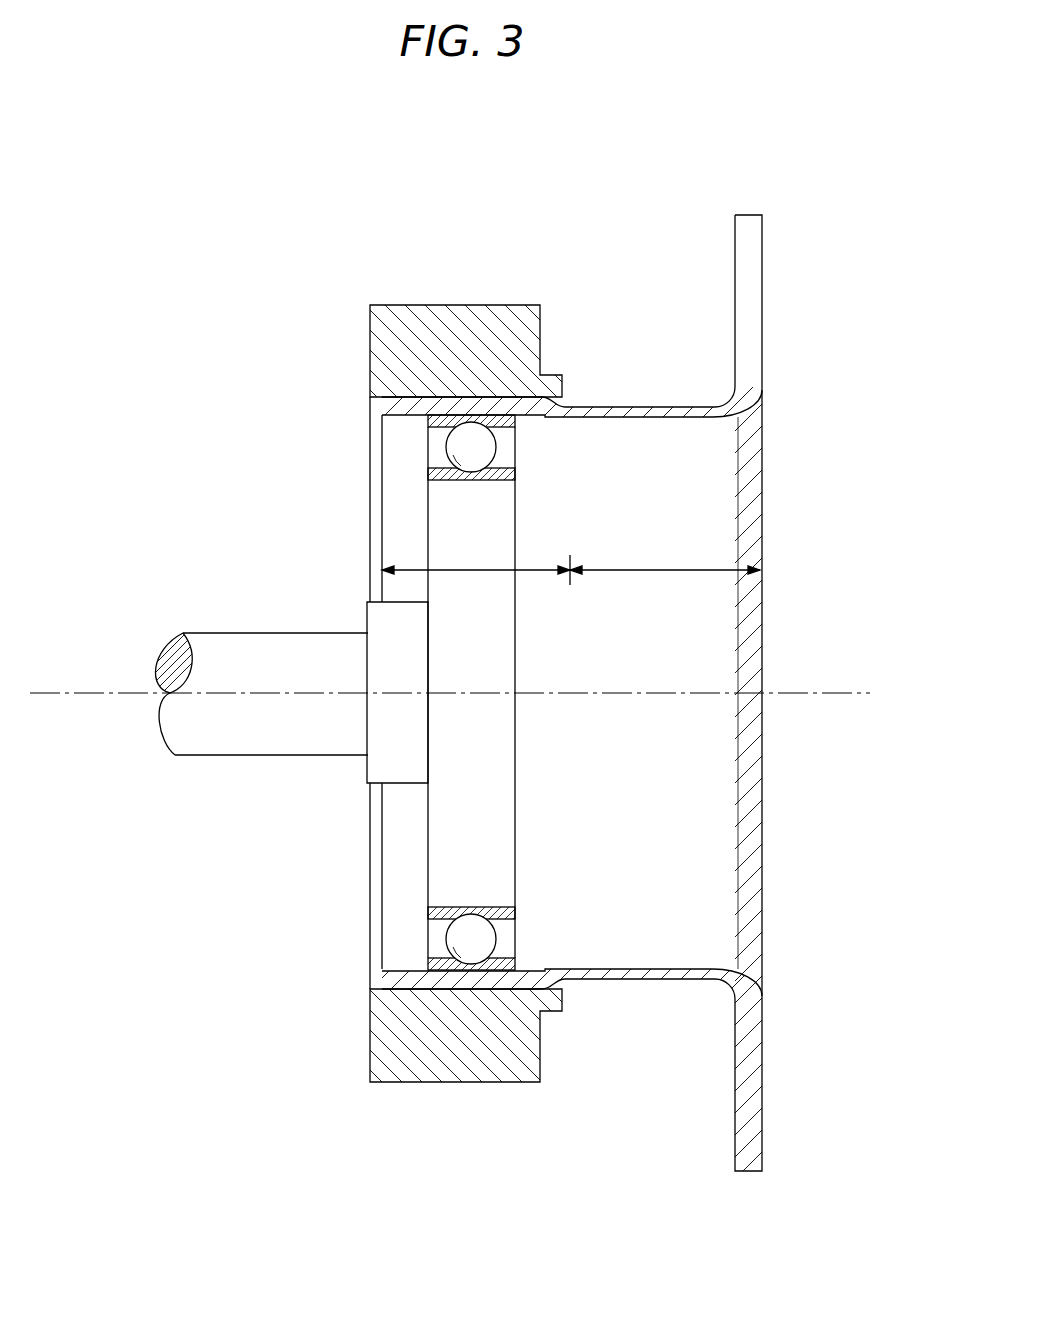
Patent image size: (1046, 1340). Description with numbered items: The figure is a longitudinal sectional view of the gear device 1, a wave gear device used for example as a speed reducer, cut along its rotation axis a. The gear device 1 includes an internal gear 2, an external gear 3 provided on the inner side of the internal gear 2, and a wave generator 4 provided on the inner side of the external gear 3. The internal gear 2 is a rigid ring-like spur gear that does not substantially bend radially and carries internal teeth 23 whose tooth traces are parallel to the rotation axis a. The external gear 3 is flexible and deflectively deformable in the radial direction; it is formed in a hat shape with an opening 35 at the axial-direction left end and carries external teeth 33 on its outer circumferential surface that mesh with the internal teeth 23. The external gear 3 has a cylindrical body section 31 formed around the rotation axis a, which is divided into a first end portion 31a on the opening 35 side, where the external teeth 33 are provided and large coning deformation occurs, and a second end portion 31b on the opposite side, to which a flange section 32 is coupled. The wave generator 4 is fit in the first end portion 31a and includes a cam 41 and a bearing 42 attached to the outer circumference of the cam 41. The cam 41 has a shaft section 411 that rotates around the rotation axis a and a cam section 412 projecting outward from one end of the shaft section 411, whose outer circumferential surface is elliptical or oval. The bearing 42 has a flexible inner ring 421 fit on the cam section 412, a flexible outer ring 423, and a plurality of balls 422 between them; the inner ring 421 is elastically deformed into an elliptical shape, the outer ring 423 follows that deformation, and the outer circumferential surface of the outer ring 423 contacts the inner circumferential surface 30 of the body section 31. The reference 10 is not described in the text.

The gear device 1 is at (803, 516).
The internal gear 2 is at (437, 645).
The external gear 3 is at (599, 687).
The wave generator 4 is at (306, 841).
The motor unit / mounting plate assembly 10 is at (523, 630).
The internal teeth 23 is at (472, 400).
The inner circumferential surface 30 is at (656, 972).
The body section 31 is at (612, 979).
The first end portion 31a is at (571, 563).
The second end portion 31b is at (665, 557).
The flange section 32 is at (750, 1076).
The external teeth 33 is at (497, 408).
The opening 35 is at (382, 492).
The cam 41 is at (342, 692).
The shaft section 411 is at (380, 765).
The cam section 412 is at (450, 828).
The bearing 42 is at (425, 841).
The inner ring 421 is at (442, 913).
The balls 422 is at (471, 951).
The outer ring 423 is at (497, 969).
The rotation axis a is at (72, 692).